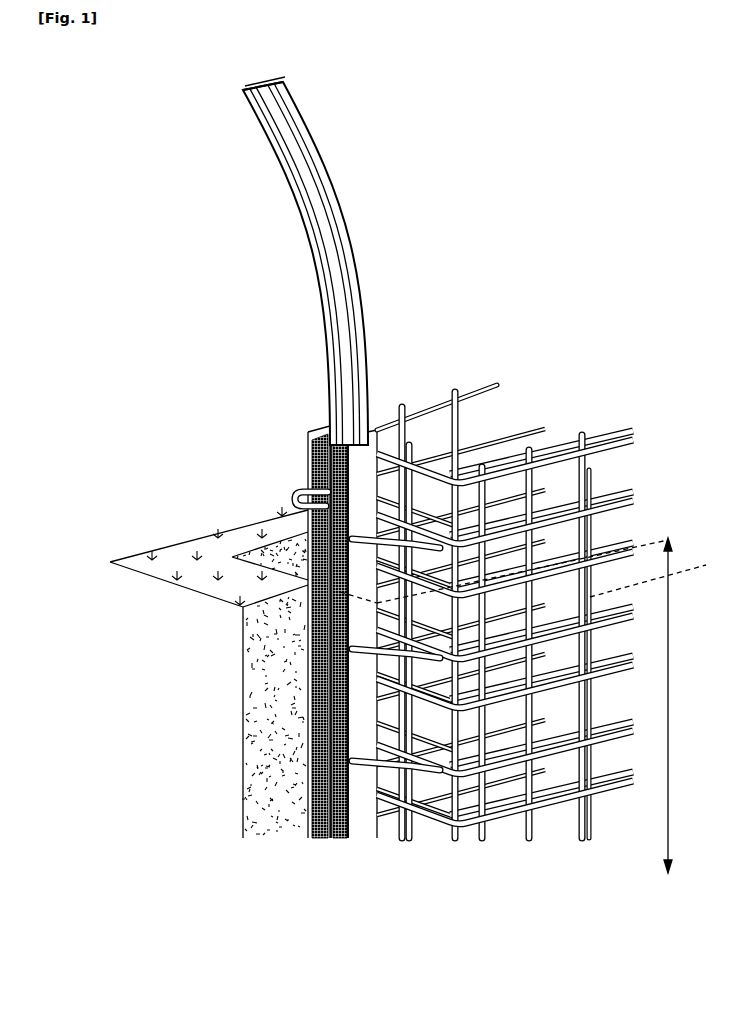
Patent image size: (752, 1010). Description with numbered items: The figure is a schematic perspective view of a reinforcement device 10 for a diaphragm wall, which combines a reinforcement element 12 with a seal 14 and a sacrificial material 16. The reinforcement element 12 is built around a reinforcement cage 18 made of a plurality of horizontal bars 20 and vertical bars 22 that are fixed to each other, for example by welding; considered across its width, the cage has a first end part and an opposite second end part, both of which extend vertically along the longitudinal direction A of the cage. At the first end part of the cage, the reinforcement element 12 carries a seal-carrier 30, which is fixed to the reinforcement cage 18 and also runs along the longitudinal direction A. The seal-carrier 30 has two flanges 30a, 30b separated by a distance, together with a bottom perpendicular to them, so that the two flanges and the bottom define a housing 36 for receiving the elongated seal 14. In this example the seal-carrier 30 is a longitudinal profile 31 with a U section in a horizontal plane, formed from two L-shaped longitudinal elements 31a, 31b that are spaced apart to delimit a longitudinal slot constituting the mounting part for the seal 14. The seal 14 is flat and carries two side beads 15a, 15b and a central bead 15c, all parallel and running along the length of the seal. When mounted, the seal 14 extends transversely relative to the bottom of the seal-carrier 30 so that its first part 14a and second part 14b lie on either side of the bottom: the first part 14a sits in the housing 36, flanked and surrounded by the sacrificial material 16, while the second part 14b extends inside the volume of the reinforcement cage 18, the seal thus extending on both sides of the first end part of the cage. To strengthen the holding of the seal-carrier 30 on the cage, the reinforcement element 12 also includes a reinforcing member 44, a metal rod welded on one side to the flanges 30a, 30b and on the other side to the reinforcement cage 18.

The reinforcement device 10 is at (512, 564).
The reinforcement element 12 is at (527, 592).
The seal 14 is at (299, 251).
The first part of the seal 14a is at (275, 128).
The second part of the seal 14b is at (293, 120).
The side bead 15a is at (253, 106).
The side bead 15b is at (282, 84).
The central bead 15c is at (262, 86).
The sacrificial material 16 is at (313, 593).
The reinforcement cage 18 is at (647, 487).
The horizontal bars 20 is at (611, 441).
The vertical bars 22 is at (584, 530).
The seal-carrier 30 is at (332, 608).
The flange 30a is at (370, 448).
The flange 30b is at (312, 428).
The longitudinal profile 31 is at (310, 593).
The L-shaped longitudinal element 31a is at (372, 411).
The L-shaped longitudinal element 31b is at (322, 411).
The housing 36 is at (328, 480).
The reinforcing member 44 is at (346, 544).
The longitudinal direction A is at (675, 705).